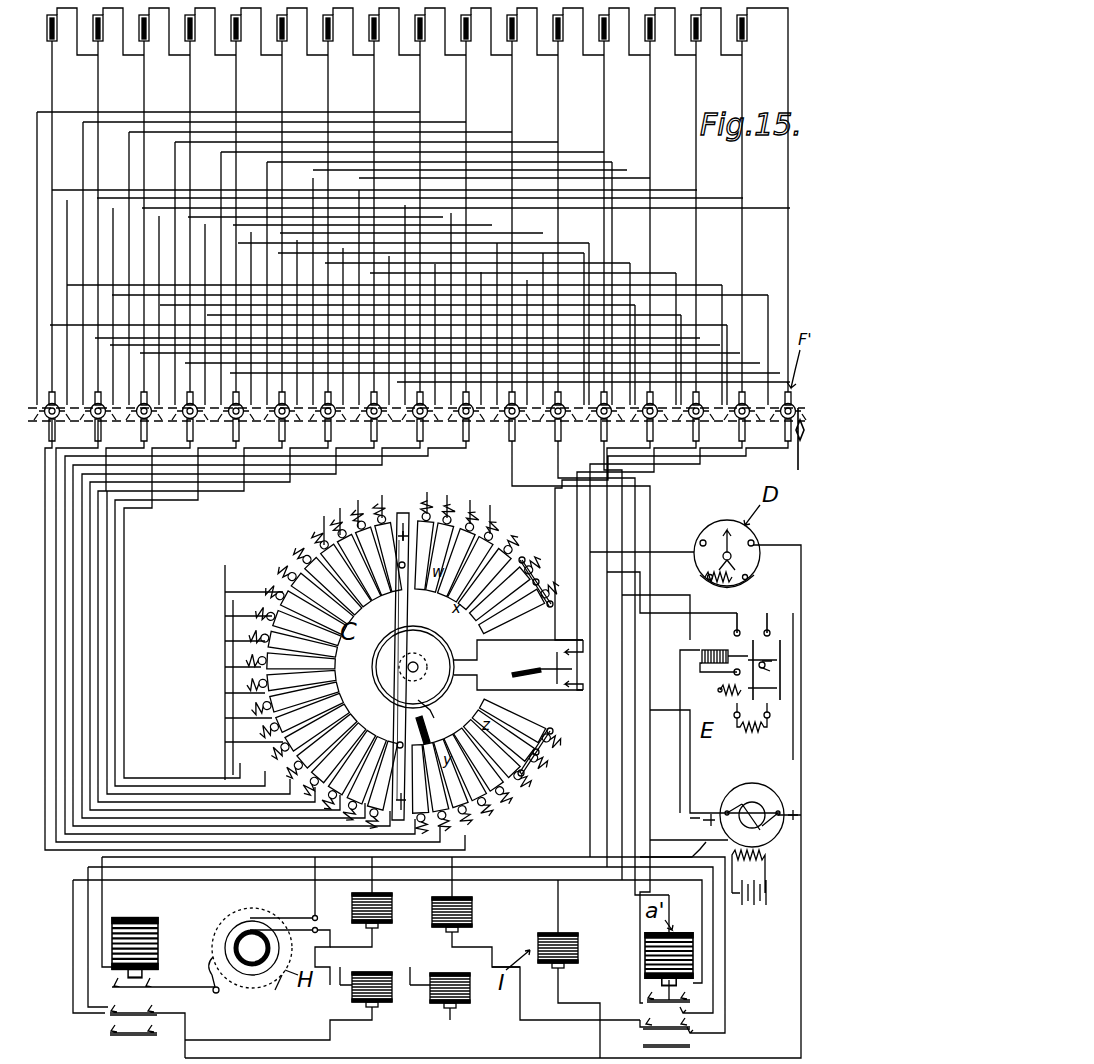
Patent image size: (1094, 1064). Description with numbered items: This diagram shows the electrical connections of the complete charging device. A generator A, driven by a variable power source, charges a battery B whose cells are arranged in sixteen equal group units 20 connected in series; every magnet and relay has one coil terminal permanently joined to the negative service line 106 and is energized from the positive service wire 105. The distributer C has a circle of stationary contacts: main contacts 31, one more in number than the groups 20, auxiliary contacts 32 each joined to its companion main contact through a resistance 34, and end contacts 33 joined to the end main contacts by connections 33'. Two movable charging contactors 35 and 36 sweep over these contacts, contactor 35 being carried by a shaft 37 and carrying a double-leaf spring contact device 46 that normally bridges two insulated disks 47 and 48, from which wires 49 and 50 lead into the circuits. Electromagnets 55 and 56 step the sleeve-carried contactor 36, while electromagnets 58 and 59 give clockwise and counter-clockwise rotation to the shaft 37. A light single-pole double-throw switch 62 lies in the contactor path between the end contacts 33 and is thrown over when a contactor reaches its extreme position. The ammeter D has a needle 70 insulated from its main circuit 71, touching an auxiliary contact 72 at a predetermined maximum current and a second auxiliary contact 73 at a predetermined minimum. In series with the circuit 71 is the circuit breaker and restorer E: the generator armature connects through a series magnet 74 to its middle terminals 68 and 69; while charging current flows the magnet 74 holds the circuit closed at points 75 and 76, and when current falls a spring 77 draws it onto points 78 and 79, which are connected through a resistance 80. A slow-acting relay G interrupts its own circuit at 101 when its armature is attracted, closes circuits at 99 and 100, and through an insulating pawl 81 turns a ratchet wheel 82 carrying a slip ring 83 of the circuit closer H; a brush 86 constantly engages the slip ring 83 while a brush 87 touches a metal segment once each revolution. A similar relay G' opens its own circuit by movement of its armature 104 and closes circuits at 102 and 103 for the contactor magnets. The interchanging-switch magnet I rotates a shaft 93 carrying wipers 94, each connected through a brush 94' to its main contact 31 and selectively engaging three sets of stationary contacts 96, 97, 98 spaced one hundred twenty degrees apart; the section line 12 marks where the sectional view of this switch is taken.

The section line 12 is at (794, 431).
The cell group unit 20 is at (530, 55).
The main contact 31 is at (492, 533).
The auxiliary contact 32 is at (265, 600).
The end contact 33 is at (509, 584).
The connection 33' is at (514, 753).
The resistance 34 is at (480, 812).
The charging contactor 35 is at (396, 728).
The charging contactor 36 is at (400, 598).
The shaft 37 is at (412, 663).
The double-leaf spring contact device 46 is at (428, 727).
The metal disk 47 is at (376, 660).
The metal disk 48 is at (373, 678).
The wire 49 is at (458, 680).
The wire 50 is at (466, 658).
The electro-magnet 55 is at (352, 900).
The electro-magnet 56 is at (472, 903).
The electro-magnet 58 is at (440, 999).
The electro-magnet 59 is at (288, 1003).
The single pole double-throw switch 62 is at (548, 662).
The middle terminal 68 is at (772, 662).
The middle terminal 69 is at (734, 674).
The indicating needle 70 is at (720, 530).
The main circuit 71 is at (727, 589).
The auxiliary contact 72 is at (755, 541).
The auxiliary contact 73 is at (700, 541).
The series magnet 74 is at (715, 650).
The contact point 75 is at (740, 631).
The contact point 76 is at (769, 631).
The spring 77 is at (728, 692).
The contact point 78 is at (735, 720).
The contact point 79 is at (768, 720).
The resistance 80 is at (752, 735).
The pawl 81 is at (210, 978).
The ratchet-wheel 82 is at (230, 925).
The slip-ring 83 is at (279, 991).
The brush 86 is at (285, 915).
The brush 87 is at (310, 927).
The shaft 93 is at (150, 420).
The wiper 94 is at (405, 409).
The brush 94' is at (181, 417).
The stationary contact 96 is at (98, 398).
The stationary contact 97 is at (58, 423).
The stationary contact 98 is at (100, 423).
The circuit closing point 99 is at (108, 1010).
The circuit closing point 100 is at (108, 1033).
The self-interrupting point 101 is at (112, 986).
The circuit closing point 102 is at (640, 1030).
The circuit closing point 103 is at (692, 1046).
The armature 104 is at (640, 1000).
The positive service wire 105 is at (700, 817).
The negative service line 106 is at (700, 858).